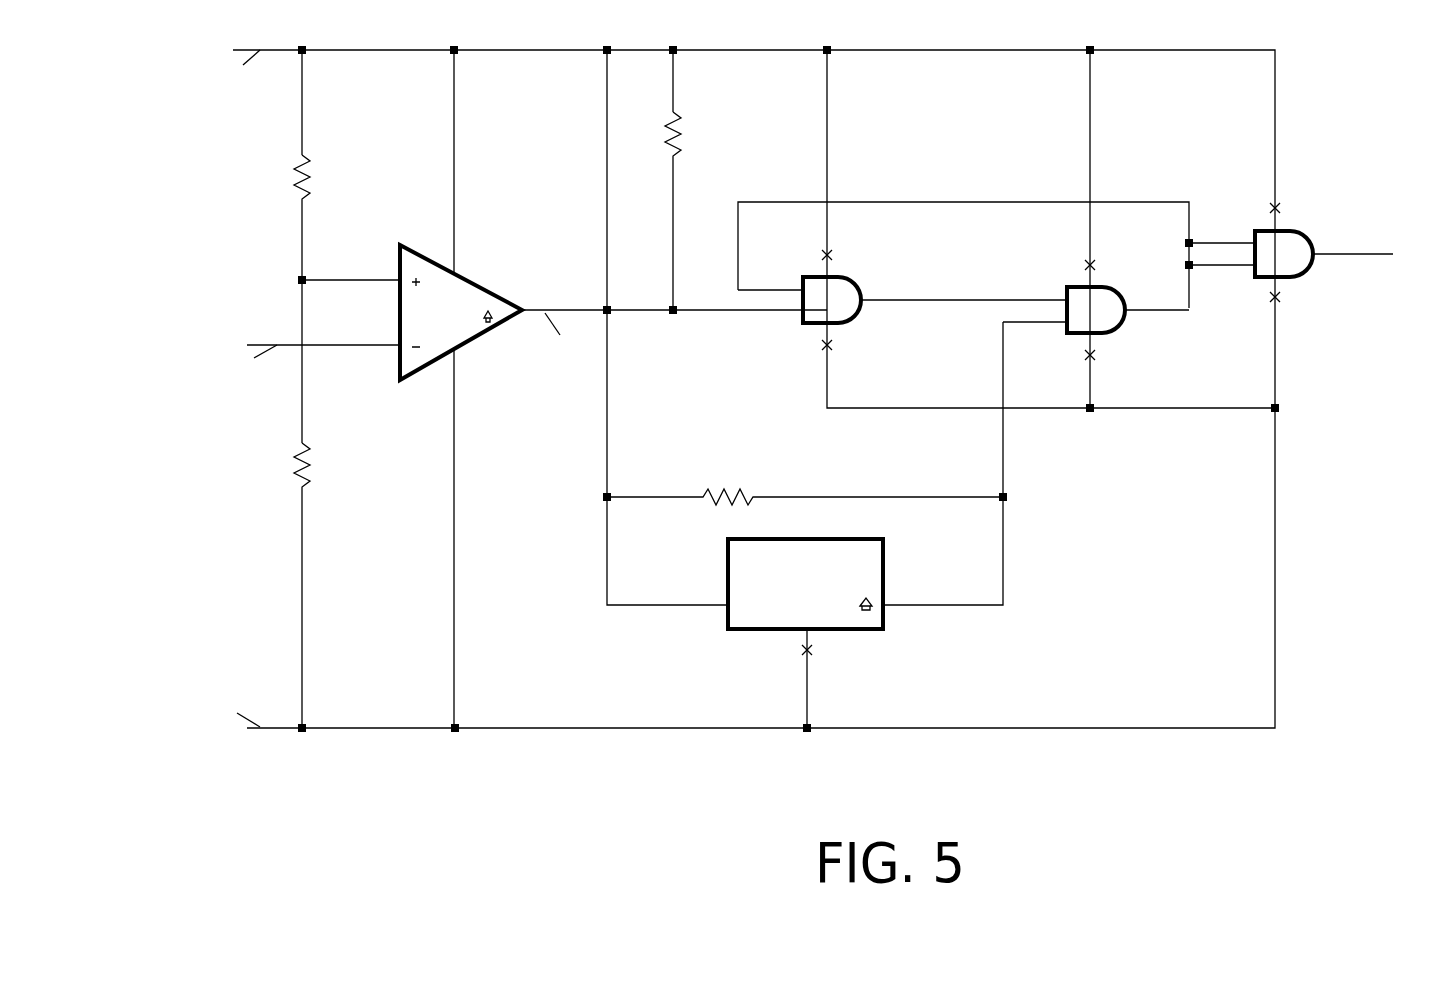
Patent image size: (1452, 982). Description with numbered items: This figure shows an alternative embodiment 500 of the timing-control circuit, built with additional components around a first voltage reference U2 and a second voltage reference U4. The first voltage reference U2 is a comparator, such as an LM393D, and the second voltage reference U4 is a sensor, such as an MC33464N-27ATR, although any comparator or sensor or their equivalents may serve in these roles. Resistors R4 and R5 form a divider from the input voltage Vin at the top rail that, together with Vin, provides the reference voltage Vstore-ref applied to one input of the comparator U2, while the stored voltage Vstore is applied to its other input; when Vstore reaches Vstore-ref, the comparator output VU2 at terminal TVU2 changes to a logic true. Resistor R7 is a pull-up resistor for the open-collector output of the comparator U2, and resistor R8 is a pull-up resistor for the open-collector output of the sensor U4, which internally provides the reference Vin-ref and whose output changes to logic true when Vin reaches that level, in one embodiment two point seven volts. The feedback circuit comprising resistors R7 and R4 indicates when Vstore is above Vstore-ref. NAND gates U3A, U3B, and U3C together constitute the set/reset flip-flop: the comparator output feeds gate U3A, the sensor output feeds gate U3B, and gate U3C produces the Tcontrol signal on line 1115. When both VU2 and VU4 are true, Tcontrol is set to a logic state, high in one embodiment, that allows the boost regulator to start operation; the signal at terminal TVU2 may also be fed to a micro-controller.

The alternative embodiment of timing control circuit 500 is at (517, 815).
The Tcontrol line 1115 is at (1368, 277).
The resistor R4 is at (325, 178).
The resistor R5 is at (338, 476).
The pull-up resistor R7 is at (690, 134).
The pull-up resistor R8 is at (805, 471).
The first voltage reference U2 is at (564, 309).
The NAND gate U3A is at (963, 277).
The NAND gate U3B is at (1096, 310).
The NAND gate U3C is at (1275, 252).
The second voltage reference U4 is at (816, 593).